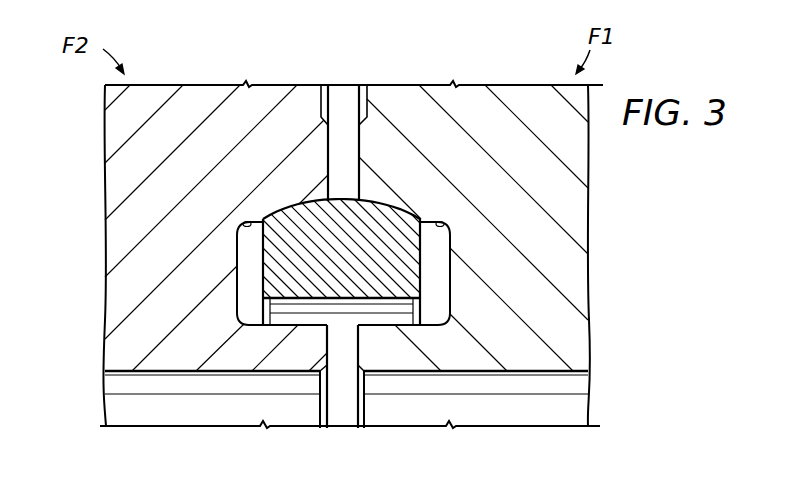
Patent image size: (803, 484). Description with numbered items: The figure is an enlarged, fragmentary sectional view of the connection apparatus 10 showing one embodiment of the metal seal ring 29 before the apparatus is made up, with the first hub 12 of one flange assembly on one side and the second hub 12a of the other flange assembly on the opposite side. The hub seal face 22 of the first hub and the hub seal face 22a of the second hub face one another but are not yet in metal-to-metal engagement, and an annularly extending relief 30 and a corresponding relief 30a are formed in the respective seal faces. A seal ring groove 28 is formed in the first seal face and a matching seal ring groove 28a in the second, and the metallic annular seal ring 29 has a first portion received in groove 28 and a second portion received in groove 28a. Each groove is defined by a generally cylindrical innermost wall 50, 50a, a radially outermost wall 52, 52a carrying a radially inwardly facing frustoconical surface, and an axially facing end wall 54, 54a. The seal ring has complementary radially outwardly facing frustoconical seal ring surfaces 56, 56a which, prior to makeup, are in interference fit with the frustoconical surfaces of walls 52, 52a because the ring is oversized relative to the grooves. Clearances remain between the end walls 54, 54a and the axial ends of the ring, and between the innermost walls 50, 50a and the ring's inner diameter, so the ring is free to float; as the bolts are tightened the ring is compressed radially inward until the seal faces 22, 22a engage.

The connection apparatus 10 is at (505, 46).
The first hub 12 is at (578, 160).
The second hub 12a is at (106, 117).
The hub seal face 22 is at (360, 158).
The hub seal face 22a is at (332, 147).
The seal ring groove 28 is at (450, 310).
The seal ring groove 28a is at (243, 312).
The seal ring 29 is at (277, 268).
The relief 30 is at (362, 88).
The relief 30a is at (325, 88).
The innermost wall 50 is at (390, 323).
The innermost wall 50a is at (288, 325).
The radially outermost wall 52 is at (449, 222).
The radially outermost wall 52a is at (237, 226).
The end wall 54 is at (450, 256).
The end wall 54a is at (237, 248).
The frustoconical seal ring surface 56 is at (393, 207).
The frustoconical seal ring surface 56a is at (311, 203).